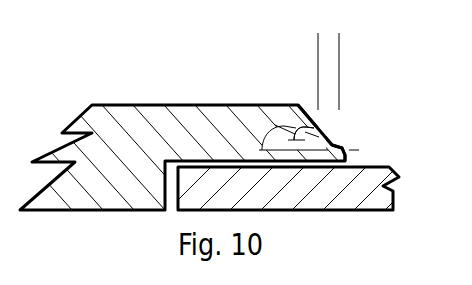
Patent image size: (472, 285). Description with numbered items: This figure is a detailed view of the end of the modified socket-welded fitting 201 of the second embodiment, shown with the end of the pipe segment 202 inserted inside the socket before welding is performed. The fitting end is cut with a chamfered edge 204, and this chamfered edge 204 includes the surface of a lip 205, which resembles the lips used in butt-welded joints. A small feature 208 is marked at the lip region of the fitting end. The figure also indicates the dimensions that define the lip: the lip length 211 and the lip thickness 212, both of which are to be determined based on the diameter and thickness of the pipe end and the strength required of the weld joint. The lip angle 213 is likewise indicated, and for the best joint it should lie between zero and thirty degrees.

The modified socket-welded fitting 201 is at (180, 117).
The pipe segment 202 is at (373, 174).
The chamfered edge 204 is at (309, 104).
The lip 205 is at (333, 152).
The rounded edge 208 is at (311, 126).
The lip length 211 is at (339, 70).
The lip thickness 212 is at (354, 162).
The lip angle 213 is at (262, 143).